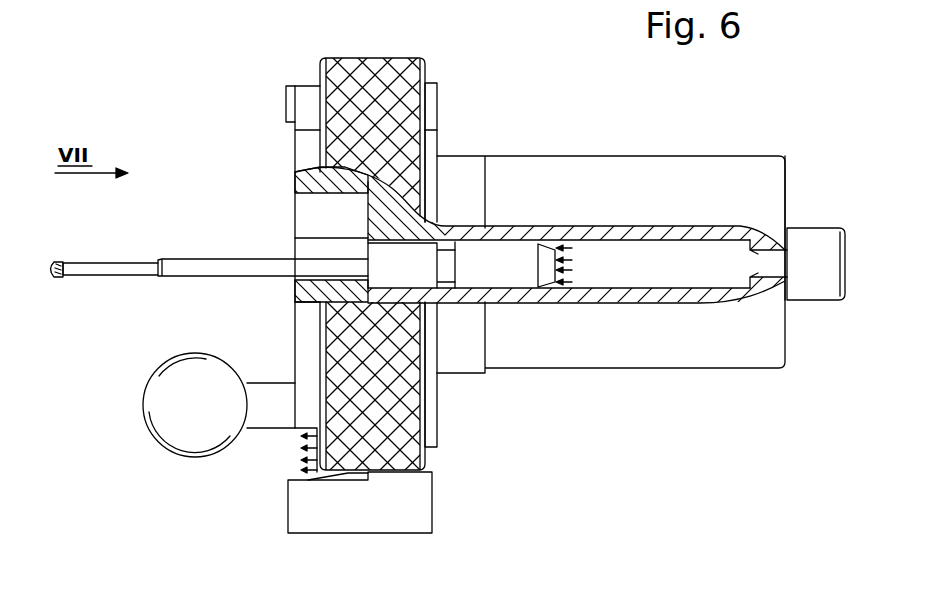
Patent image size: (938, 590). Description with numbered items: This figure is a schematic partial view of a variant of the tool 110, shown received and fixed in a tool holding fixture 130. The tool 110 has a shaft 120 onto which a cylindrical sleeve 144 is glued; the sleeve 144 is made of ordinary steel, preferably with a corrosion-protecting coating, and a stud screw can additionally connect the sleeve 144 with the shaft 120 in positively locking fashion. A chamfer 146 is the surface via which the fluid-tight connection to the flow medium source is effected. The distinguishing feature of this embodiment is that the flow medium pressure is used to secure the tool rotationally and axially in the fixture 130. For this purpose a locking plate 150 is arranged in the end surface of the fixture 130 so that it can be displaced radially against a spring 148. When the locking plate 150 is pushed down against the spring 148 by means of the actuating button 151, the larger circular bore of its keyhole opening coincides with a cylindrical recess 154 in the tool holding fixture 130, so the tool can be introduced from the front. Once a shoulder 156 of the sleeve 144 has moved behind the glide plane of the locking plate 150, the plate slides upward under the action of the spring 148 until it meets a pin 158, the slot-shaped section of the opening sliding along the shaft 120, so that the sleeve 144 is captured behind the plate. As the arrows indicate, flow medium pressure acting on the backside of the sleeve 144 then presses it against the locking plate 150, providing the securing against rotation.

The tool 110 is at (136, 292).
The shaft 120 is at (203, 262).
The tool holding fixture 130 is at (463, 173).
The cylindrical sleeve 144 is at (517, 272).
The chamfer 146 is at (842, 228).
The spring 148 is at (297, 457).
The locking plate 150 is at (300, 352).
The actuating button 151 is at (180, 427).
The cylindrical recess 154 is at (680, 288).
The shoulder 156 is at (368, 252).
The pin 158 is at (288, 96).